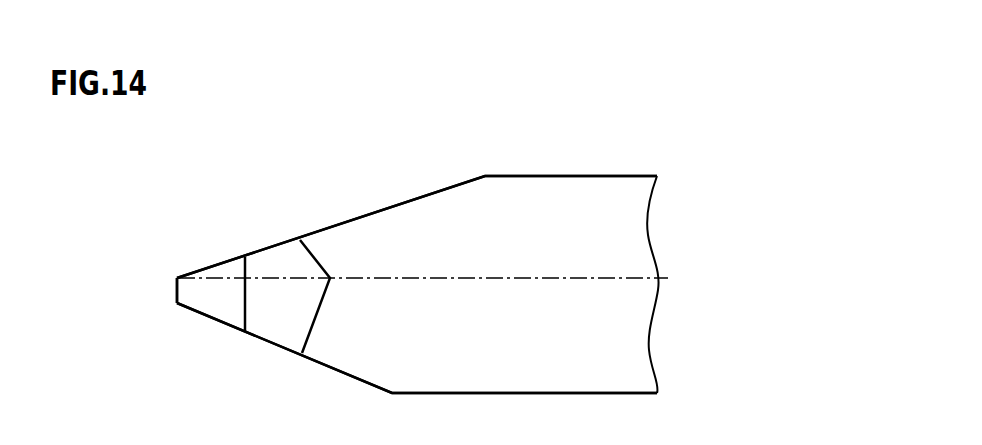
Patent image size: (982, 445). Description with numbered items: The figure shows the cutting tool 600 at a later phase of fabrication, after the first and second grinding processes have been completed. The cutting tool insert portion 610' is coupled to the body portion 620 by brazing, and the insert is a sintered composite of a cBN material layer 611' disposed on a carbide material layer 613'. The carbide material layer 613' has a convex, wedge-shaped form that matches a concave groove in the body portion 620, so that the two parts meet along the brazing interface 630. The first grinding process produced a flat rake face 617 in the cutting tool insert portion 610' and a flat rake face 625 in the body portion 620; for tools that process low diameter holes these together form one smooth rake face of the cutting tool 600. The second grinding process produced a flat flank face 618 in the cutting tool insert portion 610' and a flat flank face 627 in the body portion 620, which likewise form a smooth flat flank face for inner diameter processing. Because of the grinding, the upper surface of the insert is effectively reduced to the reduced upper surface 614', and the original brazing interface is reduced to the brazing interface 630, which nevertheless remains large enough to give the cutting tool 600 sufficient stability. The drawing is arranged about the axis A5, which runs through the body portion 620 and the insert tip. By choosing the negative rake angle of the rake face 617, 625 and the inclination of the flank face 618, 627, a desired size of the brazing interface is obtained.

The cutting tool 600 is at (683, 157).
The cutting tool insert portion 610' is at (230, 272).
The cBN material layer 611' is at (187, 336).
The carbide material layer 613' is at (277, 225).
The reduced upper surface 614' is at (133, 293).
The flat rake face 617 is at (233, 258).
The flat flank face 618 is at (233, 329).
The body portion 620 is at (520, 237).
The flat rake face 625 is at (352, 221).
The flat flank face 627 is at (332, 370).
The brazing interface 630 is at (325, 258).
The longitudinal axis A5 is at (563, 278).